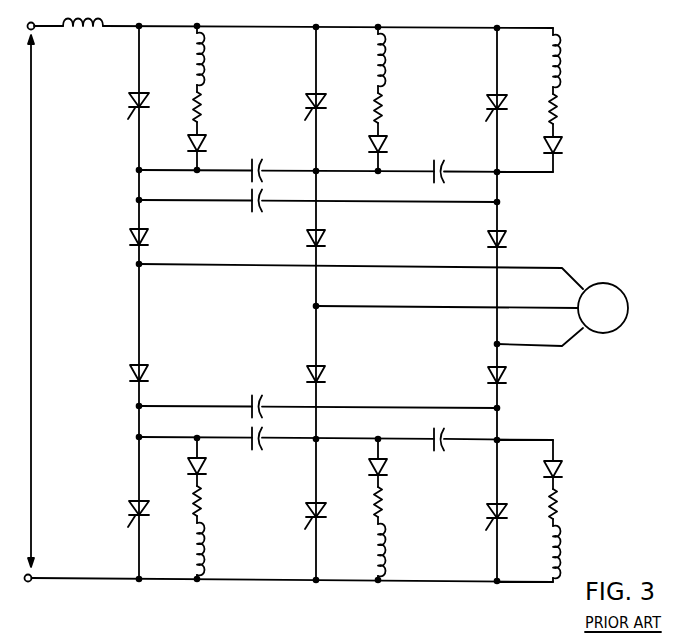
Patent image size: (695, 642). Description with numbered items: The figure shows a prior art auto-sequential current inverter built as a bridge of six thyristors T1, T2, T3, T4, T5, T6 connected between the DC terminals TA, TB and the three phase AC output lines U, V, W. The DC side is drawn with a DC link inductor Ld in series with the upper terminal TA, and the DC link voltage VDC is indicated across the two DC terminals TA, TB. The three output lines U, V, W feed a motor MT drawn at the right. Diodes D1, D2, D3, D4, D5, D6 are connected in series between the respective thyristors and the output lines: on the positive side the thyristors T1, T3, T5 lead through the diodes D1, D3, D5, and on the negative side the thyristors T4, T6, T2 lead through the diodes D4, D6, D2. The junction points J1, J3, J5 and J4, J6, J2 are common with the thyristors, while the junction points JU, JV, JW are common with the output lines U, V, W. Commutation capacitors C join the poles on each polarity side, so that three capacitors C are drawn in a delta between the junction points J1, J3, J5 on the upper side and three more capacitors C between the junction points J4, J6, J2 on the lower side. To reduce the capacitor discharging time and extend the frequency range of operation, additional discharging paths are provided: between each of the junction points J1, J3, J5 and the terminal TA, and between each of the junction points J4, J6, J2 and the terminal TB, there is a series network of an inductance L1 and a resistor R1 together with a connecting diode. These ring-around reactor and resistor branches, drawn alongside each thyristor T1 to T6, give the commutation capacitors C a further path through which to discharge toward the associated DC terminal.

The DC terminal TA is at (44, 25).
The DC terminal TB is at (77, 566).
The DC link inductor Ld is at (83, 37).
The DC link voltage VDC is at (35, 301).
The thyristor T1 is at (129, 99).
The thyristor T2 is at (487, 509).
The thyristor T3 is at (307, 100).
The thyristor T4 is at (128, 508).
The thyristor T5 is at (489, 101).
The thyristor T6 is at (307, 508).
The diode D1 is at (129, 237).
The diode D2 is at (506, 375).
The diode D3 is at (325, 238).
The diode D4 is at (130, 372).
The diode D5 is at (506, 239).
The diode D6 is at (325, 374).
The inductance L1 is at (205, 66).
The resistor R1 is at (201, 108).
The commutation capacitor C is at (254, 158).
The junction point J1 is at (137, 171).
The junction point J2 is at (500, 437).
The junction point J3 is at (314, 169).
The junction point J4 is at (137, 437).
The junction point J5 is at (499, 176).
The junction point J6 is at (318, 436).
The junction point JU is at (141, 267).
The junction point JV is at (312, 307).
The junction point JW is at (493, 344).
The phase AC output line U is at (540, 268).
The phase AC output line V is at (541, 307).
The phase AC output line W is at (541, 345).
The motor MT is at (603, 308).